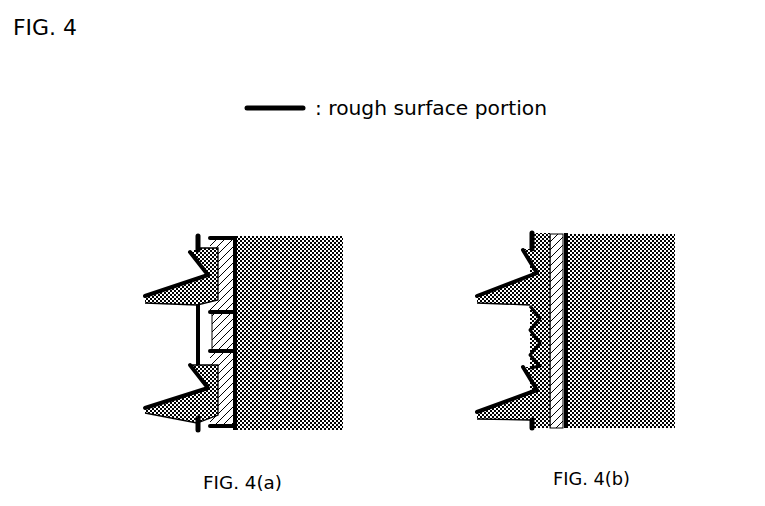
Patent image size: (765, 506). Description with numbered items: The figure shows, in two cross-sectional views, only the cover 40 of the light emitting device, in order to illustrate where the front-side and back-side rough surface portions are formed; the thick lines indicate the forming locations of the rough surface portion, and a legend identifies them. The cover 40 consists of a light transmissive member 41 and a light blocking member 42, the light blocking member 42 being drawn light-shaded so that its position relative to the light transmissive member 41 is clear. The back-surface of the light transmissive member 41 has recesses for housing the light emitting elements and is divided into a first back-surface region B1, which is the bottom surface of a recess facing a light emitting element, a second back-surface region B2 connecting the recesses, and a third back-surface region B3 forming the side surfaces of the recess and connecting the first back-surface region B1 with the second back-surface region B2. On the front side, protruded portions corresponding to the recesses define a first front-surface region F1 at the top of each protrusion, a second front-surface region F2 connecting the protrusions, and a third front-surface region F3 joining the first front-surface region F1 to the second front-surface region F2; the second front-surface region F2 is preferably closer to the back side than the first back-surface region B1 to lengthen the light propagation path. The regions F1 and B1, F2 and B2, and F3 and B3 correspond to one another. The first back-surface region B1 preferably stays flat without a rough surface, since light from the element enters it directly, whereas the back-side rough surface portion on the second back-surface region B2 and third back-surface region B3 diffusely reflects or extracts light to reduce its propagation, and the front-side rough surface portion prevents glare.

The cover 40 is at (153, 179).
The light transmissive member 41 is at (225, 250).
The light blocking member 42 is at (330, 307).
The first front-surface region F1 is at (197, 331).
The second front-surface region F2 is at (200, 273).
The third front-surface region F3 is at (192, 378).
The first back-surface region B1 is at (242, 332).
The second back-surface region B2 is at (248, 260).
The third back-surface region B3 is at (245, 385).